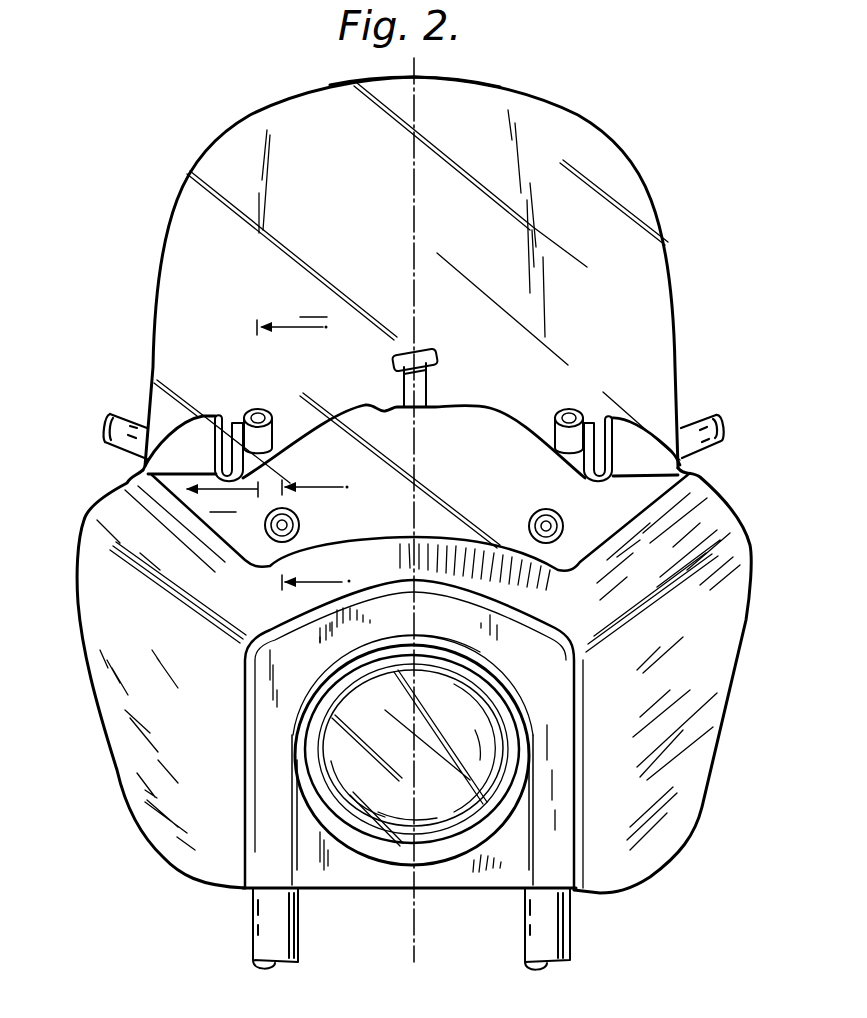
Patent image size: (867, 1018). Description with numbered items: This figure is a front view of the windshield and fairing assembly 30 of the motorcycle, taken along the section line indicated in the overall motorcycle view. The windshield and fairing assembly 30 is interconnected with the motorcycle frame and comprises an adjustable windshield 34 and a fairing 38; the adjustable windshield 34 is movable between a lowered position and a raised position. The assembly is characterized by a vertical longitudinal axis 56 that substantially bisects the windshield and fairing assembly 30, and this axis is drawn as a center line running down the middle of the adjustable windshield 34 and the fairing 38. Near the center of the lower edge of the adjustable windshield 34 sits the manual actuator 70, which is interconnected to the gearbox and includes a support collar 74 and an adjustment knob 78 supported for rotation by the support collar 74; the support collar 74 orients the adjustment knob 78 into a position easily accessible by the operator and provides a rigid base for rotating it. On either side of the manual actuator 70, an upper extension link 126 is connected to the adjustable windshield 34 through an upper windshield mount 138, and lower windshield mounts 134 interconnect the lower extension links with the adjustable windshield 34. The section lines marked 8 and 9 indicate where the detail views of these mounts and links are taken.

The windshield and fairing assembly 30 is at (82, 425).
The adjustable windshield 34 is at (623, 207).
The fairing 38 is at (668, 768).
The vertical longitudinal axis 56 is at (414, 112).
The manual actuator 70 is at (374, 395).
The support collar 74 is at (427, 393).
The adjustment knob 78 is at (434, 350).
The upper extension link 126 is at (136, 476).
The lower windshield mount 134 is at (300, 520).
The upper windshield mount 138 is at (260, 409).
The section line 8- 8 is at (316, 522).
The section line 9- 9 is at (257, 402).